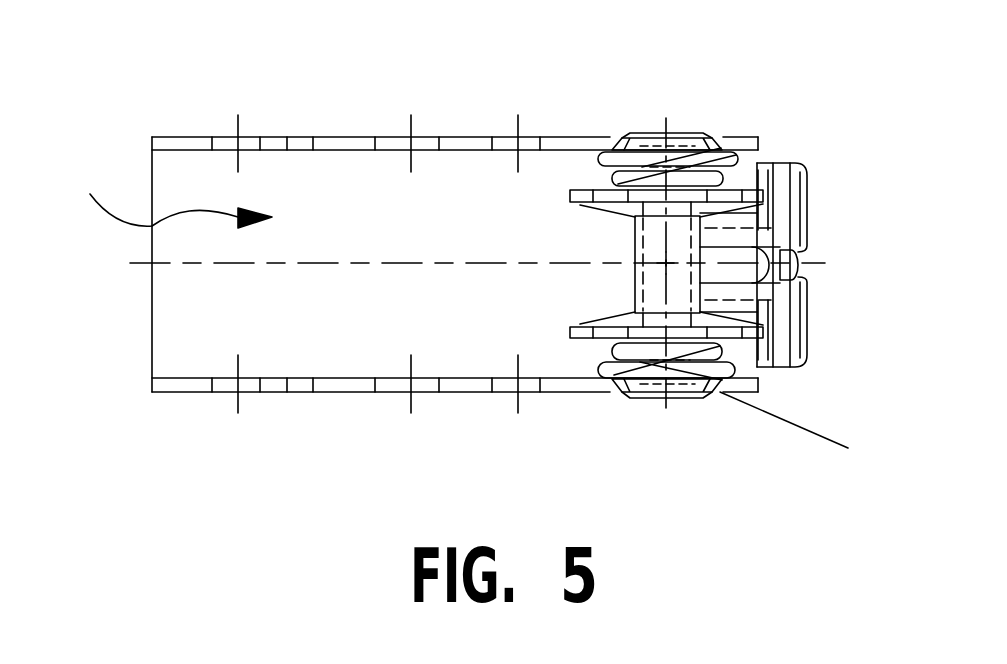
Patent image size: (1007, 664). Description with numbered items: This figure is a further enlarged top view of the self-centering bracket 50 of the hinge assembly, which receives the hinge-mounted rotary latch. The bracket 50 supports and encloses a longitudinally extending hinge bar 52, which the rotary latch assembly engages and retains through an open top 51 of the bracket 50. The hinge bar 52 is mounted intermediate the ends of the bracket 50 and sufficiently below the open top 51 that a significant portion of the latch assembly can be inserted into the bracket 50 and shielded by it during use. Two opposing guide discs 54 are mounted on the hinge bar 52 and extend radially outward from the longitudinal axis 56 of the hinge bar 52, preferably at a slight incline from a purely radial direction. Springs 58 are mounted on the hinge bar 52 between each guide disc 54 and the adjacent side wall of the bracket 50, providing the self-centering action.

The bracket 50 is at (458, 137).
The open top 51 is at (637, 243).
The hinge bar 52 is at (643, 279).
The guide discs 54 is at (593, 203).
The longitudinal axis 56 is at (667, 402).
The springs 58 is at (755, 163).